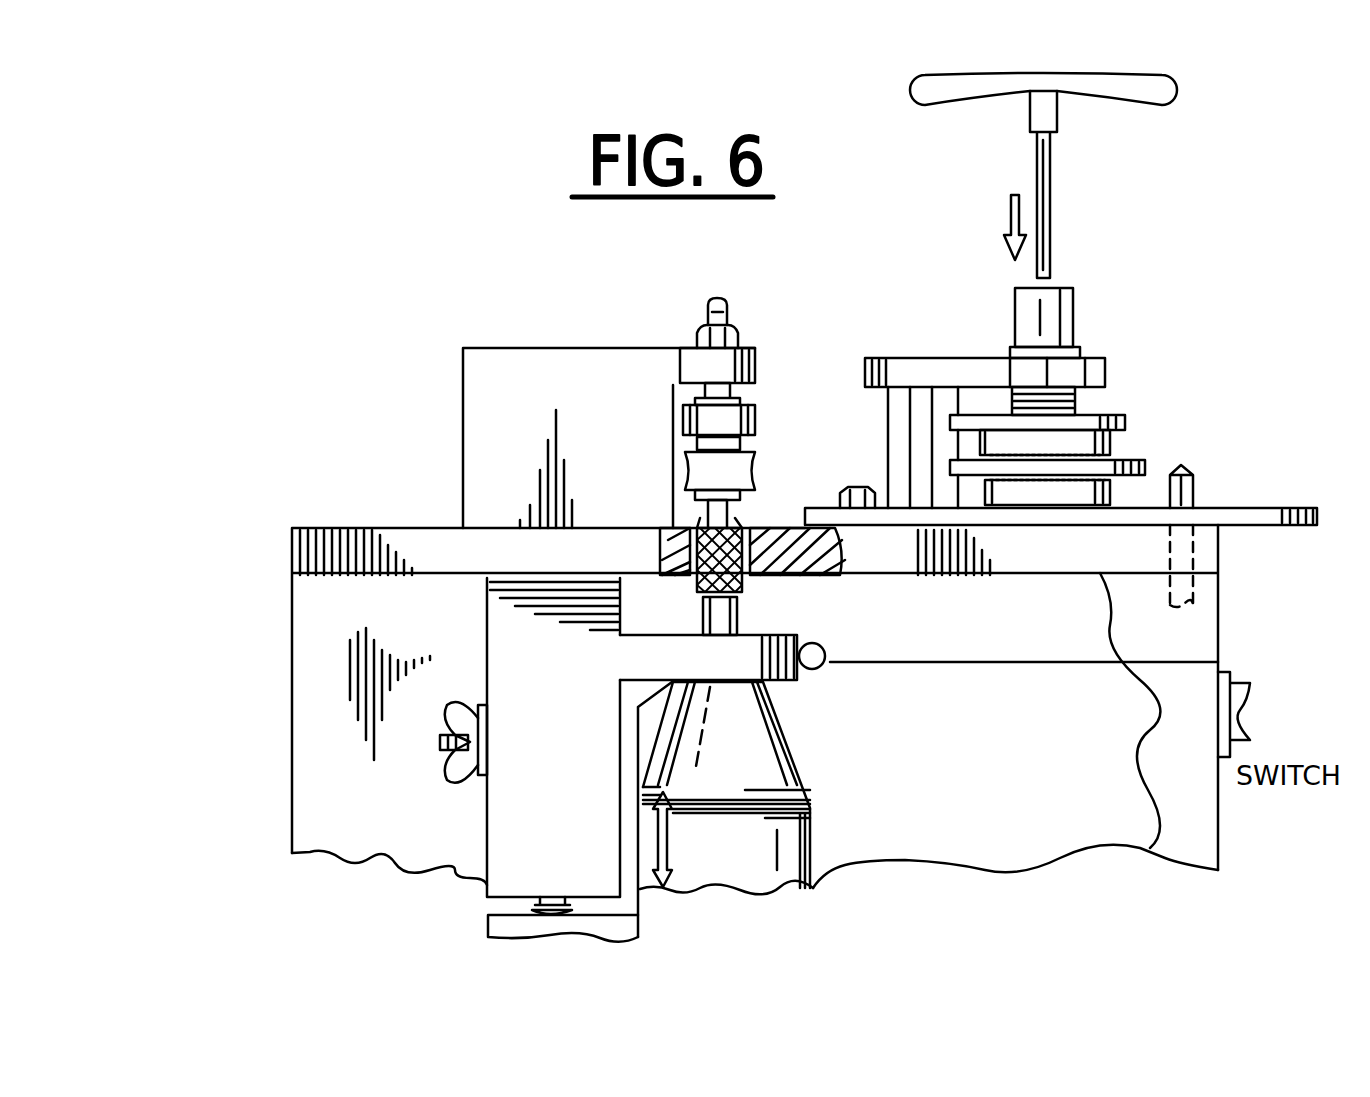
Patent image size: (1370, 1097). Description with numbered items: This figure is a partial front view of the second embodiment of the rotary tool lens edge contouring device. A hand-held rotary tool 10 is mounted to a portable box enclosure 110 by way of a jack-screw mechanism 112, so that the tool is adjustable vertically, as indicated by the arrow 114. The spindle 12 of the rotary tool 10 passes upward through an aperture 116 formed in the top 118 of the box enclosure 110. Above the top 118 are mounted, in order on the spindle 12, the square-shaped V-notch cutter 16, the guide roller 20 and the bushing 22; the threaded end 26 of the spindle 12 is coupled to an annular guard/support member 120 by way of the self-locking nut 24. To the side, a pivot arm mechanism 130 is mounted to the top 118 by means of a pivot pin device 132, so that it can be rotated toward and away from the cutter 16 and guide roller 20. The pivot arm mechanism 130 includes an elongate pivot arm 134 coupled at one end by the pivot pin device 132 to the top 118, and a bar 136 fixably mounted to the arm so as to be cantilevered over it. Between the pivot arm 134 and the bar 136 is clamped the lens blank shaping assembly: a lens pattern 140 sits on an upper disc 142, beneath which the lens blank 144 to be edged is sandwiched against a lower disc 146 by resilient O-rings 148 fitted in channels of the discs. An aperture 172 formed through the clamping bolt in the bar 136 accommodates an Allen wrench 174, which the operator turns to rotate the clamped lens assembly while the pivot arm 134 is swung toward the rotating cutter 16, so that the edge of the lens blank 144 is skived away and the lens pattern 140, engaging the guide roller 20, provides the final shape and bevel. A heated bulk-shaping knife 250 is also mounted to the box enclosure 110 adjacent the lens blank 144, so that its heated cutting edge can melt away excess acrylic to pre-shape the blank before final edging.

The hand-held rotary tool 10 is at (800, 762).
The spindle 12 is at (700, 515).
The cutter 16 is at (690, 476).
The guide roller 20 is at (685, 427).
The bushing 22 is at (675, 391).
The self-locking nut 24 is at (745, 330).
The threaded end of spindle 26 is at (715, 300).
The portable box enclosure 110 is at (305, 692).
The jack-screw mechanism 112 is at (497, 812).
The arrow indicating vertical adjustment 114 is at (655, 830).
The aperture 116 is at (722, 635).
The top of portable box enclosure 118 is at (860, 548).
The annular guard/support member 120 is at (562, 362).
The pivot arm mechanism 130 is at (1029, 318).
The pivot pin device 132 is at (838, 492).
The elongate pivot arm 134 is at (1283, 507).
The bar 136 is at (905, 352).
The lens pattern 140 is at (1120, 412).
The upper disc 142 is at (1110, 438).
The lens blank 144 is at (1140, 470).
The lower disc 146 is at (1110, 500).
The resilient O-rings 148 is at (960, 488).
The aperture in clamping bolt 172 is at (1075, 305).
The Allen wrench 174 is at (1050, 215).
The heated bulk-shaping knife 250 is at (1195, 560).